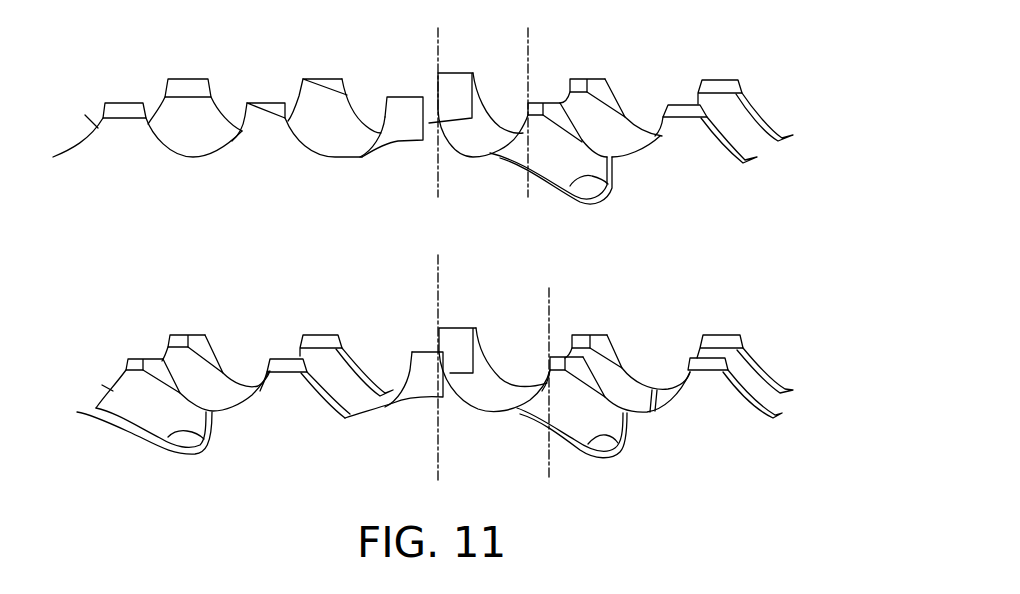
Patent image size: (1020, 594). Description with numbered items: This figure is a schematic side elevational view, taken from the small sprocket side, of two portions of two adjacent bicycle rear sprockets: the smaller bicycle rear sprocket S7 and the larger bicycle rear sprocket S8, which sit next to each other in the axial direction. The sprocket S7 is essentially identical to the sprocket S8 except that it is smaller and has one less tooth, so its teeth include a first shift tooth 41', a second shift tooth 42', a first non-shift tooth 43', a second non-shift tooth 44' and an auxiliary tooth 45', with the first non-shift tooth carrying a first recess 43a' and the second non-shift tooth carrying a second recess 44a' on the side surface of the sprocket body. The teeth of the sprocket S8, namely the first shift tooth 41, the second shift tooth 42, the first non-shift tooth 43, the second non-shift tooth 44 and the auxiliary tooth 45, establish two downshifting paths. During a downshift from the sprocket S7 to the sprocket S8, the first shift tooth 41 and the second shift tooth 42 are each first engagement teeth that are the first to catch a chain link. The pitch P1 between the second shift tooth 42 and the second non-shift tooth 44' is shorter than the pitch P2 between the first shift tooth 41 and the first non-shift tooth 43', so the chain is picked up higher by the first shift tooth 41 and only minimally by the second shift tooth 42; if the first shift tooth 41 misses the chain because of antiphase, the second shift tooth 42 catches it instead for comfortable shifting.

The bicycle (second) rear sprocket S7 is at (120, 101).
The bicycle (first) rear sprocket S8 is at (192, 78).
The first shift tooth 41 is at (478, 81).
The first shift tooth 41' is at (391, 95).
The second shift tooth 42 is at (494, 336).
The second shift tooth 42' is at (394, 353).
The first non-shift tooth 43 is at (611, 76).
The first non-shift tooth 43' is at (594, 101).
The first recess 43a' is at (380, 314).
The second non-shift tooth 44 is at (627, 352).
The second non-shift tooth 44' is at (616, 381).
The second recess 44a' is at (607, 441).
The auxiliary tooth 45 is at (546, 205).
The auxiliary tooth 45' is at (521, 227).
The pitch P1 is at (528, 228).
The pitch P2 is at (549, 472).